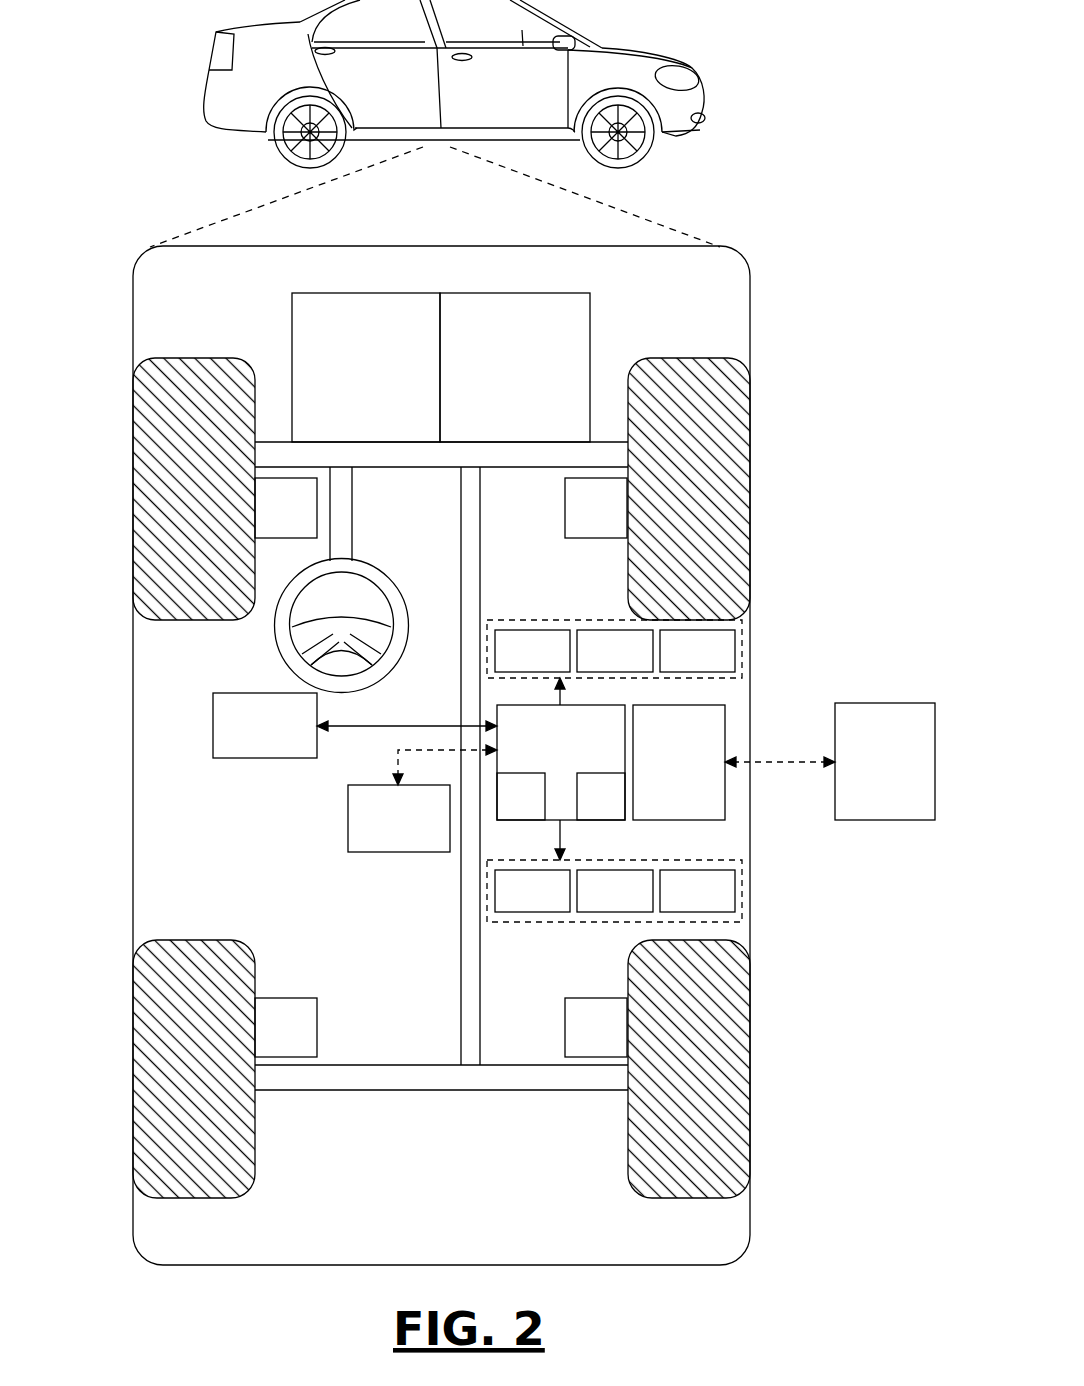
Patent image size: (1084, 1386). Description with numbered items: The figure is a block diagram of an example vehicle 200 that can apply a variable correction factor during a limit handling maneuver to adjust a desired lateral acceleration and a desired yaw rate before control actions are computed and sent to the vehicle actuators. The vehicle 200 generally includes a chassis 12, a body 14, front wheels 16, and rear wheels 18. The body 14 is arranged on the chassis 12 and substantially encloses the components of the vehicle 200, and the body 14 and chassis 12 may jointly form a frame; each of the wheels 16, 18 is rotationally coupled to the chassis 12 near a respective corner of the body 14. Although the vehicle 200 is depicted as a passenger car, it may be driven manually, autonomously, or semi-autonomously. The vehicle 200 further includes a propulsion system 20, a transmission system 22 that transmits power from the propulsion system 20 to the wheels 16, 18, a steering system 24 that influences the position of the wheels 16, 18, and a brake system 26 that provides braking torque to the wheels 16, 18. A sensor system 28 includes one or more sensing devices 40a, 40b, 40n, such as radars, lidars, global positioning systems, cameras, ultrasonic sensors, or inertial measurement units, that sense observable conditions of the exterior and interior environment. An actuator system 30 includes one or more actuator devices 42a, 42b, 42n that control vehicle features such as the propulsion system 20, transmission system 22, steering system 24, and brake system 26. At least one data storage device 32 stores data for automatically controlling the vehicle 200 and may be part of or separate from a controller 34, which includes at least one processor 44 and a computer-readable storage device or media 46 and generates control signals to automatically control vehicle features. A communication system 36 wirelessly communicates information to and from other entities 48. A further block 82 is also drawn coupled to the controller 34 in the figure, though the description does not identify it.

The vehicle 200 is at (210, 76).
The chassis 12 is at (461, 905).
The body 14 is at (133, 718).
The front wheels 16 is at (197, 358).
The rear wheels 18 is at (192, 1198).
The propulsion system 20 is at (366, 367).
The transmission system 22 is at (515, 367).
The steering system 24 is at (362, 537).
The brake system 26 is at (441, 767).
The sensor system 28 is at (576, 620).
The actuator system 30 is at (577, 922).
The data storage device 32 is at (399, 818).
The controller 34 is at (561, 762).
The communication system 36 is at (679, 762).
The sensing device 40a is at (532, 651).
The sensing device 40b is at (615, 651).
The sensing device 40n is at (697, 651).
The actuator device 42a is at (532, 891).
The actuator device 42b is at (615, 891).
The actuator device 42n is at (697, 891).
The processor 44 is at (521, 796).
The computer-readable storage device or media 46 is at (601, 796).
The other entities 48 is at (885, 761).
The human machine interface 82 is at (265, 725).